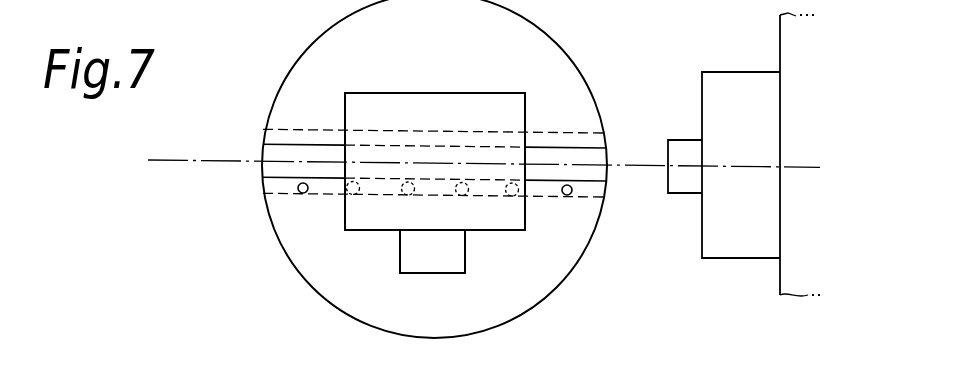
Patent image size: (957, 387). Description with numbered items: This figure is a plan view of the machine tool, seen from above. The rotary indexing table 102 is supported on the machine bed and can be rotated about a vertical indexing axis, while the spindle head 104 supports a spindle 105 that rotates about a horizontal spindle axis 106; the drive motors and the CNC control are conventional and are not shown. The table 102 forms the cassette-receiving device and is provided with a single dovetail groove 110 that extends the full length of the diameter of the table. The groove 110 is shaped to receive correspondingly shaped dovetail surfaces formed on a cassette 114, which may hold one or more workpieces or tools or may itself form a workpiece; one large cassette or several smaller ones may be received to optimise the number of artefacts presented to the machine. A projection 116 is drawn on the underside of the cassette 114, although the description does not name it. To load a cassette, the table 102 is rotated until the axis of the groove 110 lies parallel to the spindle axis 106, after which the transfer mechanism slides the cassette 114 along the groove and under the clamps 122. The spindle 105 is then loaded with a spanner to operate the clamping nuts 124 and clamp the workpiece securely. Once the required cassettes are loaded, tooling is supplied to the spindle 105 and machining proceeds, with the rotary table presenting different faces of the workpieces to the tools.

The rotary indexing table 102 is at (305, 50).
The spindle head 104 is at (739, 82).
The spindle 105 is at (683, 145).
The spindle axis 106 is at (634, 170).
The dovetail groove 110 is at (264, 145).
The cassette 114 is at (512, 93).
The bottom projection 116 is at (445, 257).
The clamps 122 is at (266, 188).
The clamping nuts 124 is at (303, 193).